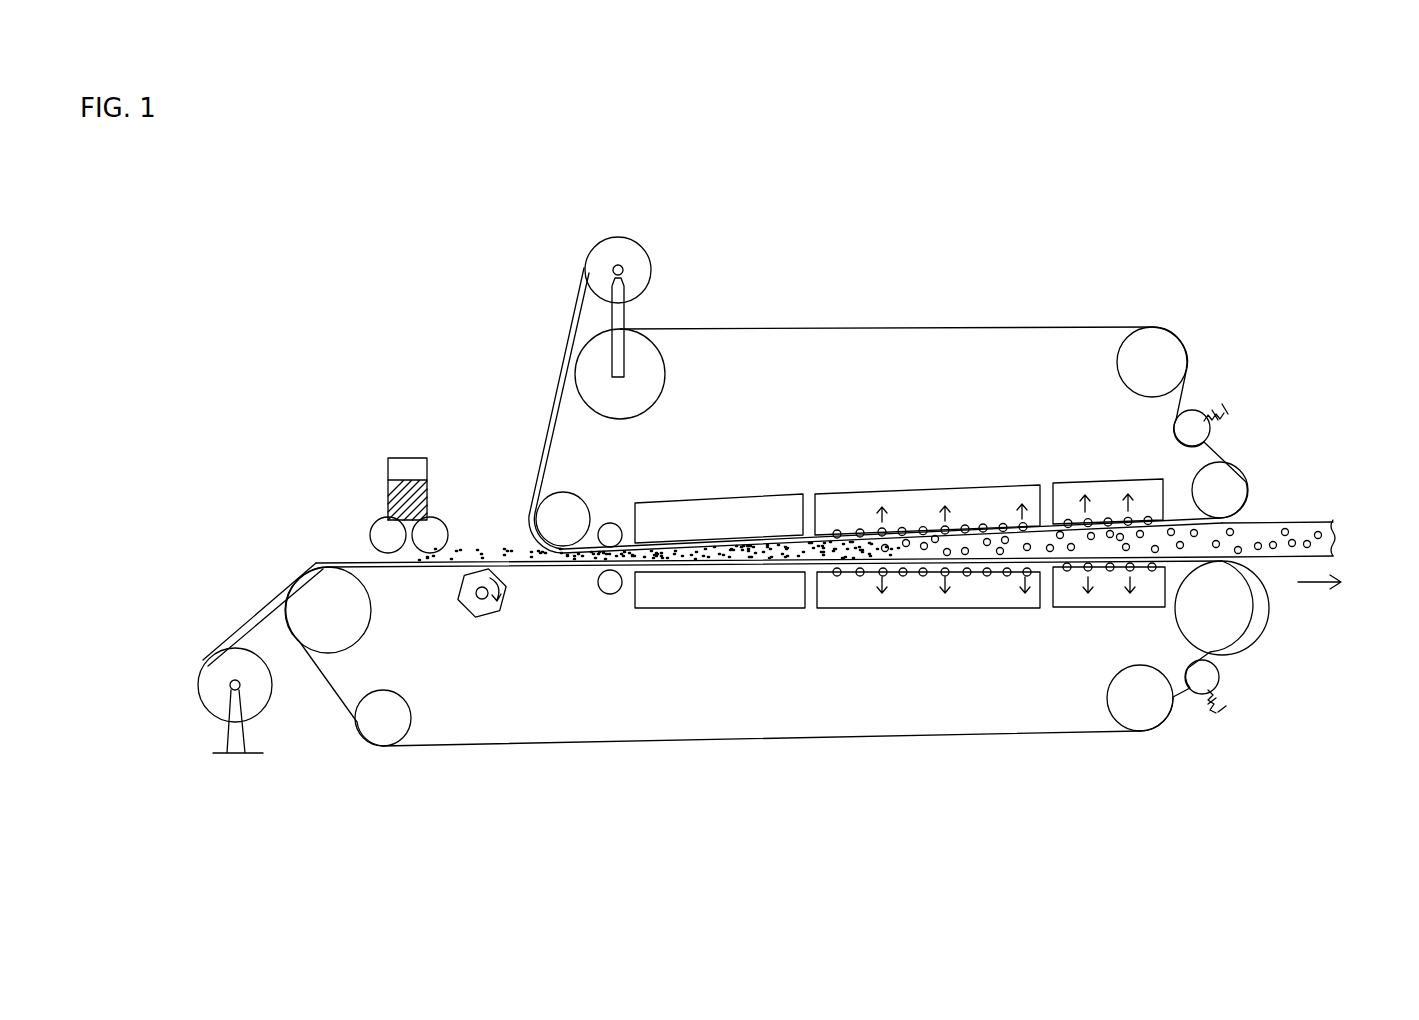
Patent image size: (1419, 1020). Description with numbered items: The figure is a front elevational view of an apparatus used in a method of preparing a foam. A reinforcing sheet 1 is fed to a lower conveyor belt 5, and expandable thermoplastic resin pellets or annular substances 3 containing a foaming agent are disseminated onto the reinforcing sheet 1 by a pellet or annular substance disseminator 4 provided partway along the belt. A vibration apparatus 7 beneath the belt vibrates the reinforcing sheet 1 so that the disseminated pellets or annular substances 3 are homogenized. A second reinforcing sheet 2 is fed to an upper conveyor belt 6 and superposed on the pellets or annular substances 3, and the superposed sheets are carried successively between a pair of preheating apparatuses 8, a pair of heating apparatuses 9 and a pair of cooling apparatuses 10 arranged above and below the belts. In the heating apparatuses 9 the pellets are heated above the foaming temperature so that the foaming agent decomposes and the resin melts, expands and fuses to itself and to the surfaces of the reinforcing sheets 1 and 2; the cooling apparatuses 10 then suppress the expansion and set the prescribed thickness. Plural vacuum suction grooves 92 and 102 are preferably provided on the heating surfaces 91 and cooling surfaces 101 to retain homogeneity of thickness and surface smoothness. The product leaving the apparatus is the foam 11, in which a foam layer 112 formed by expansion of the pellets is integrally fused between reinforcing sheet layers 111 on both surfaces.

The reinforcing sheet 1 is at (260, 608).
The reinforcing sheet 2 is at (553, 392).
The thermoplastic resin pellets or annular substances 3 is at (462, 560).
The pellet or annular substance disseminator 4 is at (375, 494).
The conveyor belt 5 is at (622, 745).
The conveyor belt 6 is at (728, 330).
The vibration apparatus 7 is at (485, 612).
The preheating apparatus 8 is at (763, 495).
The heating apparatus 9 is at (840, 510).
The heating surface 91 is at (910, 537).
The vacuum suction groove 92 is at (963, 530).
The cooling apparatus 10 is at (1098, 527).
The cooling surface 101 is at (1100, 525).
The vacuum suction groove 102 is at (1077, 492).
The foam 11 is at (1397, 390).
The lower base sheet 111 is at (1272, 555).
The foam layer 112 is at (1323, 518).